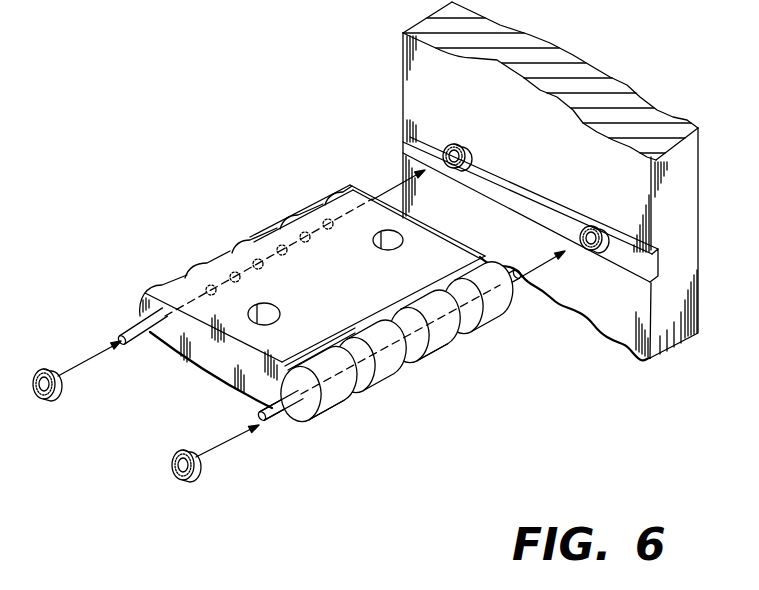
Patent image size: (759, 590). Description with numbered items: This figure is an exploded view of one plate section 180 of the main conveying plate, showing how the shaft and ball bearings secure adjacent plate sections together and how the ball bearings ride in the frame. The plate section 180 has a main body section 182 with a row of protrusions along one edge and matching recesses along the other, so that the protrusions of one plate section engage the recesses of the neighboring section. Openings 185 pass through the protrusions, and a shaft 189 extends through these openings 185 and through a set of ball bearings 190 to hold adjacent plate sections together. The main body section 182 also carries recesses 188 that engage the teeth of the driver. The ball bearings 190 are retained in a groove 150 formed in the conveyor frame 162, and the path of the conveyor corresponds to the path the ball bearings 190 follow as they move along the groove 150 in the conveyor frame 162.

The groove 150 is at (527, 197).
The conveyor frame 162 is at (571, 140).
The plate section 180 is at (248, 233).
The main body section 182 is at (335, 283).
The openings 185 is at (433, 365).
The recesses 188 is at (392, 240).
The shaft 189 is at (298, 420).
The ball bearings 190 is at (60, 397).